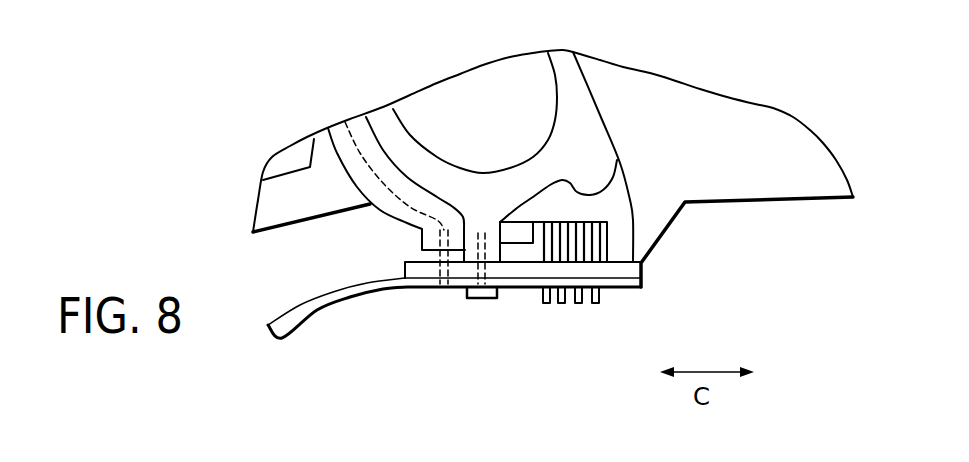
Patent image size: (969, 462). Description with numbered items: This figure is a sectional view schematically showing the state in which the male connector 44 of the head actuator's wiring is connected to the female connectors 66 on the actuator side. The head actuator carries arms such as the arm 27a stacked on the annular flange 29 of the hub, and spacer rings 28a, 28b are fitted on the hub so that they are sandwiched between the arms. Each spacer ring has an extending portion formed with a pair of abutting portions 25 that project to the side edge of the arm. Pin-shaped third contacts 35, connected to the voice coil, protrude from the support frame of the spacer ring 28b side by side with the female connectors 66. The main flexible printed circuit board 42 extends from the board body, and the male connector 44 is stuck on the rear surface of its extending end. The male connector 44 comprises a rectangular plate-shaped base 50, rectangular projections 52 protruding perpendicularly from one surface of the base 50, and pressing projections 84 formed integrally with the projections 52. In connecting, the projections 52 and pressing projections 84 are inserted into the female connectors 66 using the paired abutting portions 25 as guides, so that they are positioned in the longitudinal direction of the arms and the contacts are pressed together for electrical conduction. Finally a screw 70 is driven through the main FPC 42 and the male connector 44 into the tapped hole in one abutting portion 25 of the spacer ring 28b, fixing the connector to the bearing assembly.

The abutting portion 25 is at (483, 216).
The arm 27a is at (793, 130).
The spacer ring 28a is at (630, 142).
The spacer ring 28b is at (575, 82).
The annular flange 29 is at (587, 123).
The third contact 35 is at (440, 268).
The main flexible printed circuit board 42 is at (328, 307).
The male connector 44 is at (539, 330).
The base 50 is at (623, 278).
The projection 52 is at (570, 253).
The female connector 66 is at (614, 211).
The screw 70 is at (481, 282).
The pressing projection 84 is at (517, 250).